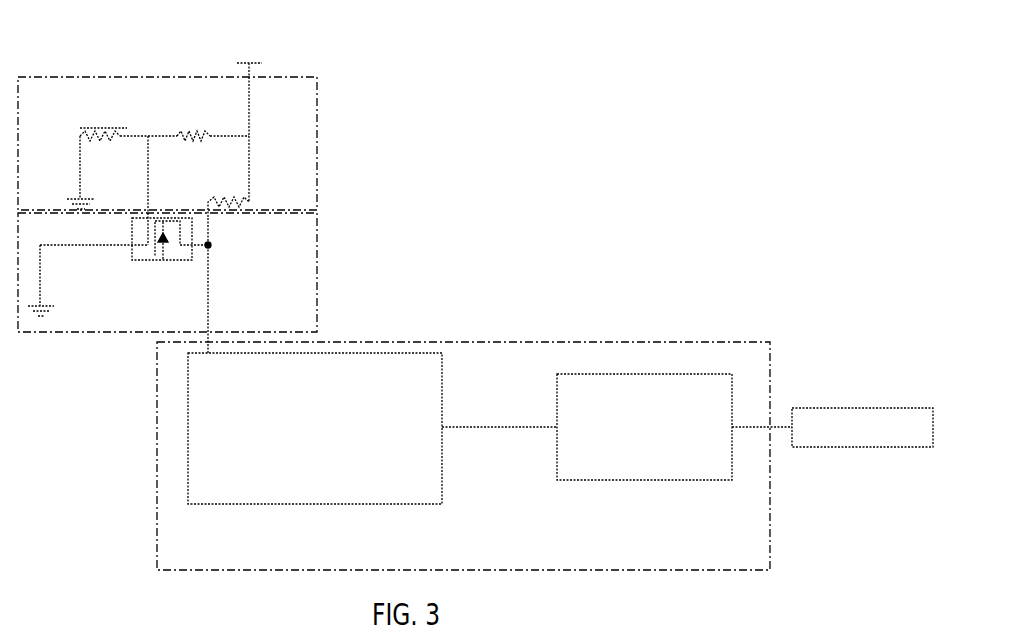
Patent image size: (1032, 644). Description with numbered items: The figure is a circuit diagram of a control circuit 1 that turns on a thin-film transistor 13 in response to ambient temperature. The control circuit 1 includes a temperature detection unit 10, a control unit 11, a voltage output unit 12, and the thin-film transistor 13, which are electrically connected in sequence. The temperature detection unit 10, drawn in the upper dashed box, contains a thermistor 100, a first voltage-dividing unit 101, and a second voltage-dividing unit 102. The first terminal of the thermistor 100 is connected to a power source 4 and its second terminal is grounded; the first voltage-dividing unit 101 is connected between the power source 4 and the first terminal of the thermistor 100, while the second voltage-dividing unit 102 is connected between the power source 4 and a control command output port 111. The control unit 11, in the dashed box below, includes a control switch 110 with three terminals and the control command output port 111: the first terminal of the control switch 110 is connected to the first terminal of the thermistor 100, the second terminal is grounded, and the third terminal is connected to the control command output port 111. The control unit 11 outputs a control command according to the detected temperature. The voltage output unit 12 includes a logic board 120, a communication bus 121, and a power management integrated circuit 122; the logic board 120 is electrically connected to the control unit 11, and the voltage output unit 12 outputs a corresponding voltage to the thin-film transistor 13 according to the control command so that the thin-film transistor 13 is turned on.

The control circuit 1 is at (663, 24).
The power source 4 is at (250, 63).
The temperature detection unit 10 is at (297, 77).
The thermistor 100 is at (110, 128).
The first voltage-dividing unit 101 is at (190, 131).
The second voltage-dividing unit 102 is at (249, 195).
The control unit 11 is at (317, 280).
The control switch 110 is at (180, 260).
The control command output port 111 is at (210, 246).
The voltage output unit 12 is at (727, 342).
The logic board 120 is at (422, 506).
The communication bus 121 is at (486, 427).
The power management integrated circuit 122 is at (607, 480).
The thin-film transistor 13 is at (870, 408).